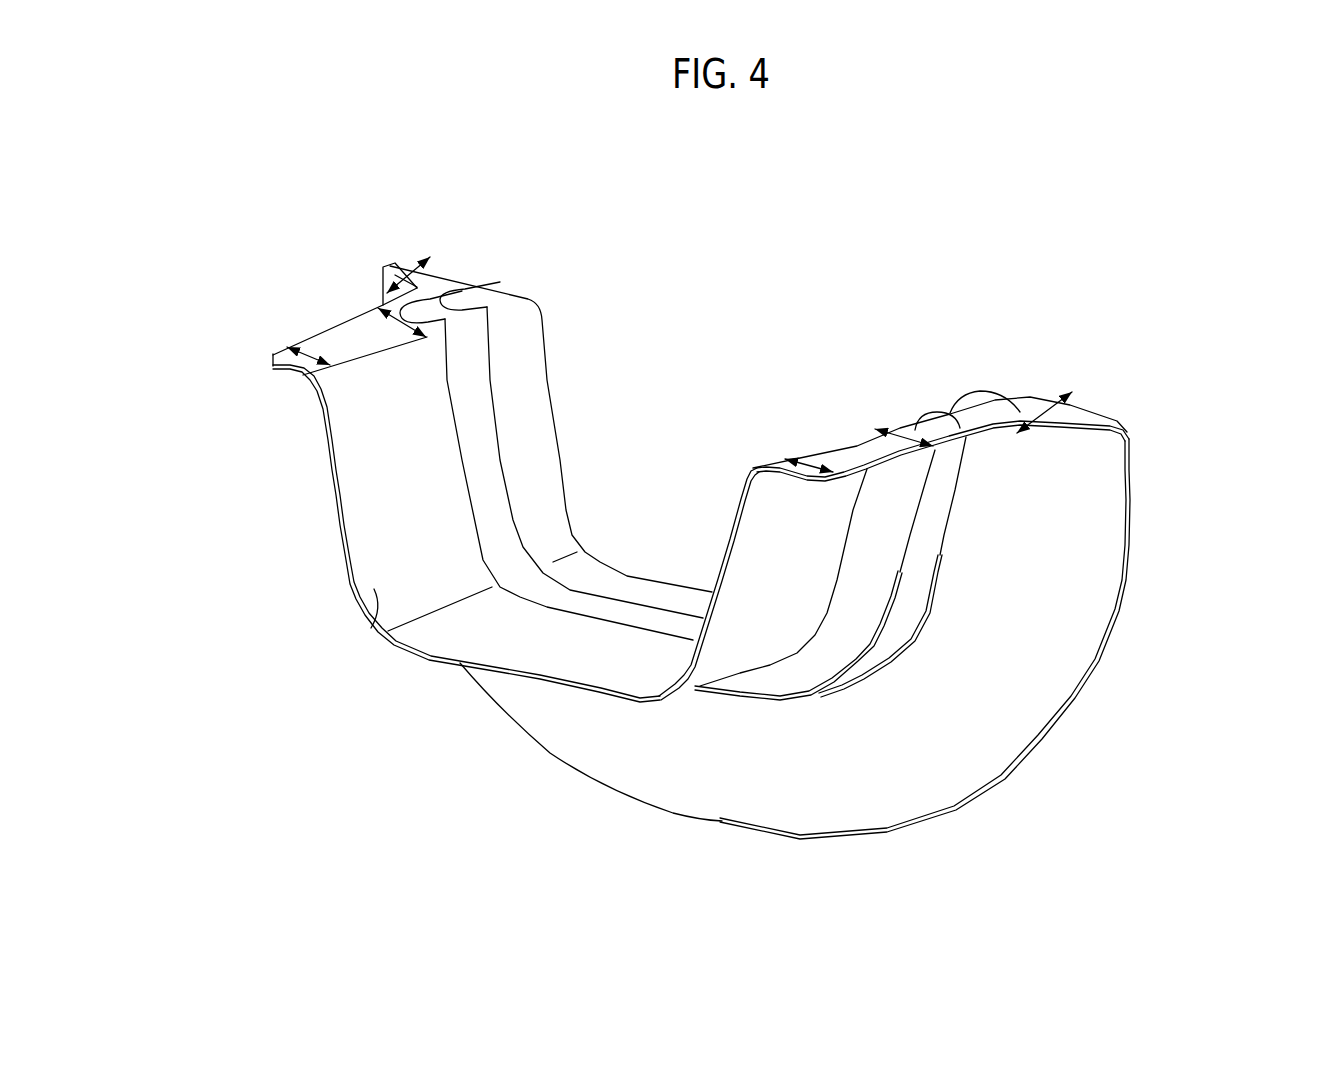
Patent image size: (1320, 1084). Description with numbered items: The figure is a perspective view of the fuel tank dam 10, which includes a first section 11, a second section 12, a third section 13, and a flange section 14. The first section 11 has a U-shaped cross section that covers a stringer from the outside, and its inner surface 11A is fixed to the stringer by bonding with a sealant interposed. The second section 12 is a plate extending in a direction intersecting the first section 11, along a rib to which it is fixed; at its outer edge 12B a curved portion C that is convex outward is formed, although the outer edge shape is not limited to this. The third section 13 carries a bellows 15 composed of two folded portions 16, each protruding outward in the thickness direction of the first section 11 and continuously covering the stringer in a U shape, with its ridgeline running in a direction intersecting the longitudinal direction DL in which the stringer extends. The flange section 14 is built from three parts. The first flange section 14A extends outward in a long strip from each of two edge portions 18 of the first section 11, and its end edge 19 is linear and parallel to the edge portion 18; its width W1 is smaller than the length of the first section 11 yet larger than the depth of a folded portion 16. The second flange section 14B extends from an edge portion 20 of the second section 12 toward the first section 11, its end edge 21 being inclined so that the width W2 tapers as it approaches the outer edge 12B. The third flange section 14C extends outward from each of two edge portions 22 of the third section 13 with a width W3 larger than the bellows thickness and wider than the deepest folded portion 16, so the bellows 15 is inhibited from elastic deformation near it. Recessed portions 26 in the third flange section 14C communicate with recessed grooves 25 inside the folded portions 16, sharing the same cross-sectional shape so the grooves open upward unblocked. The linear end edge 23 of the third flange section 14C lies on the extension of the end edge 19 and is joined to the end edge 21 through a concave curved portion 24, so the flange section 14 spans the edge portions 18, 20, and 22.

The fuel tank dam 10 is at (1072, 256).
The first section 11 is at (372, 625).
The inner surface 11A is at (557, 648).
The second section 12 is at (1062, 660).
The outer edge 12B is at (1010, 773).
The third section 13 is at (852, 657).
The flange section 14 is at (268, 370).
The first flange section 14A is at (327, 357).
The second flange section 14B is at (390, 265).
The third flange section 14C is at (417, 298).
The bellows 15 is at (903, 640).
The folded portion 16 is at (822, 697).
The edge portion 18 is at (312, 395).
The end edge 19 is at (300, 343).
The edge portion 20 is at (1115, 437).
The end edge 21 is at (388, 281).
The edge portion 22 is at (500, 290).
The end edge 23 is at (376, 303).
The concave curved portion 24 is at (1027, 435).
The recessed groove 25 is at (480, 461).
The recessed portion 26 is at (440, 295).
The curved portion C is at (943, 810).
The longitudinal direction DL is at (865, 184).
The width of the first flange section W1 is at (303, 366).
The width of the second flange section W2 is at (407, 263).
The width of the third flange section W3 is at (403, 325).